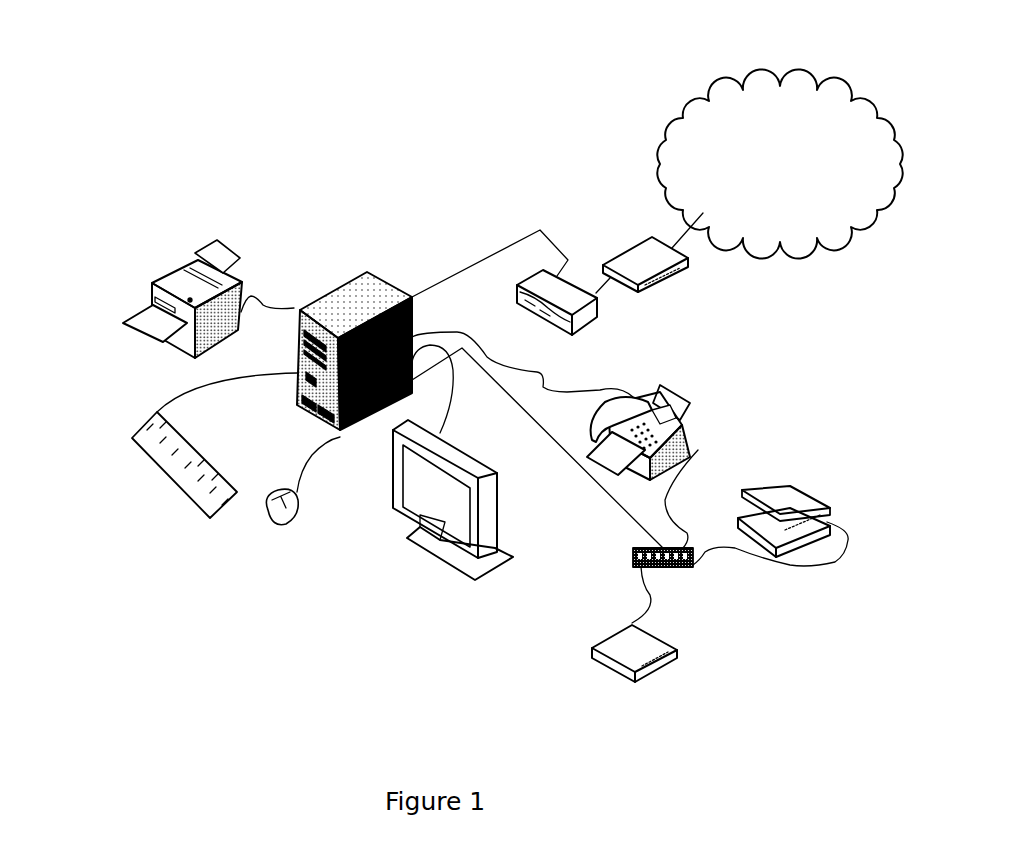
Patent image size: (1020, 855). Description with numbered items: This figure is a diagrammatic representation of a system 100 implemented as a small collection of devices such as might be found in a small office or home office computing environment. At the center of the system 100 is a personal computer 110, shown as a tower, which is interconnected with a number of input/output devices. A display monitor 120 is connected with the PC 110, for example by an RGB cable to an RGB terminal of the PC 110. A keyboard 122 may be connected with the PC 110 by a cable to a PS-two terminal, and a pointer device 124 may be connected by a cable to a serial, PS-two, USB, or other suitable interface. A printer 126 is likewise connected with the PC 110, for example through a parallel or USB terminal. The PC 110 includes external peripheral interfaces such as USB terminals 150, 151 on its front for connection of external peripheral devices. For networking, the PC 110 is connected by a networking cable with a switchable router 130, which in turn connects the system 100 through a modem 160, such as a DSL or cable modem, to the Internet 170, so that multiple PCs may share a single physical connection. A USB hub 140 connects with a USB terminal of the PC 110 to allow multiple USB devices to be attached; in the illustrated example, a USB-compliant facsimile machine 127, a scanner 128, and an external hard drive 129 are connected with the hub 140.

The system 100 is at (404, 61).
The computer 110 is at (347, 277).
The display monitor 120 is at (498, 572).
The keyboard 122 is at (133, 437).
The pointer device 124 is at (293, 515).
The printer 126 is at (148, 288).
The facsimile machine 127 is at (698, 402).
The scanner 128 is at (788, 487).
The external hard drive 129 is at (678, 652).
The switchable router 130 is at (598, 318).
The USB hub 140 is at (660, 567).
The USB terminal 150 is at (302, 399).
The USB terminal 151 is at (318, 418).
The modem 160 is at (657, 292).
The Internet 170 is at (759, 192).